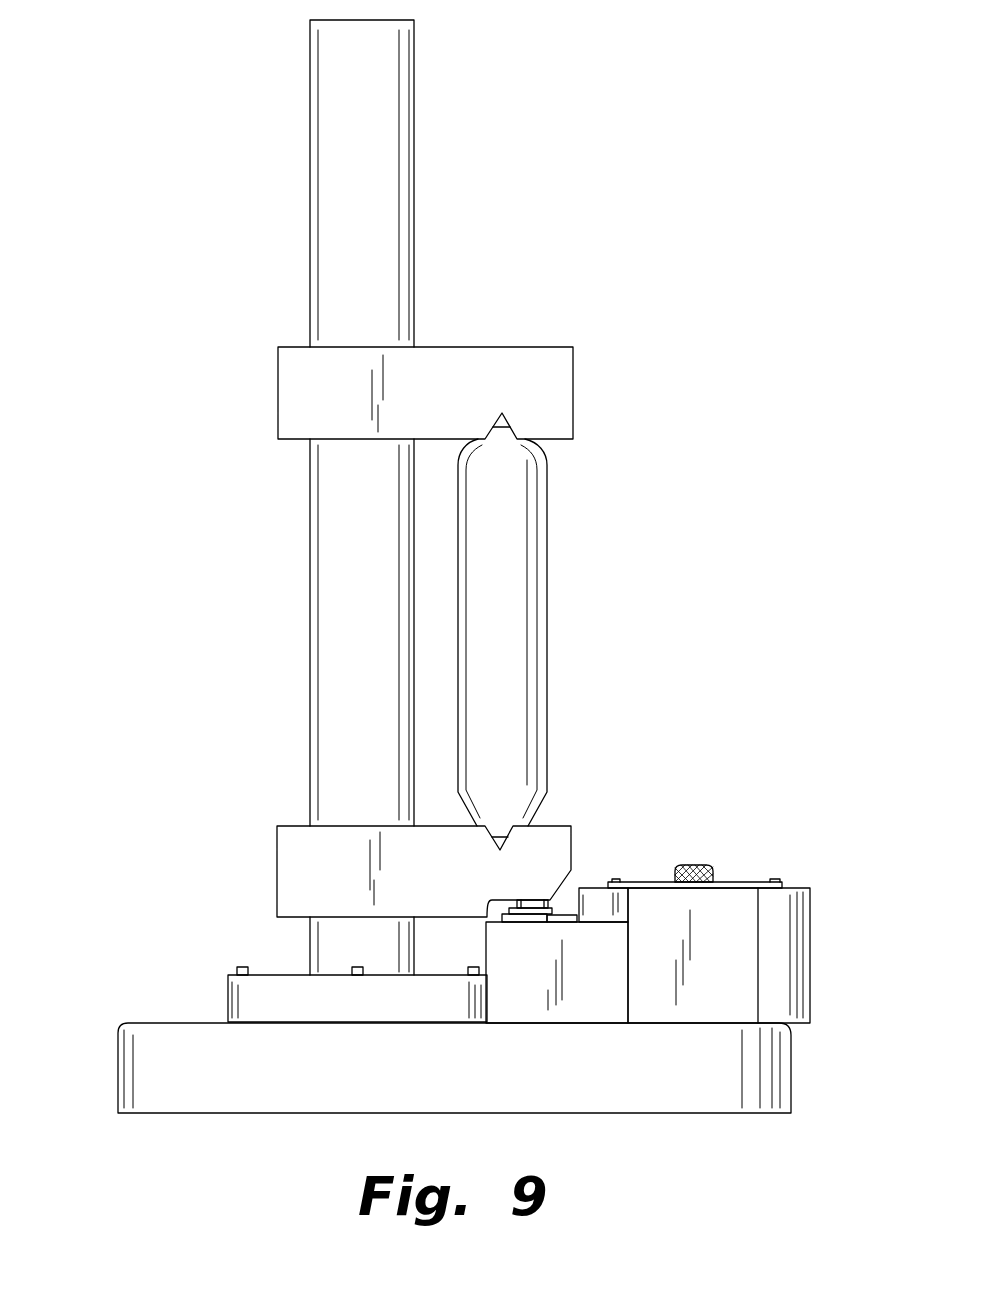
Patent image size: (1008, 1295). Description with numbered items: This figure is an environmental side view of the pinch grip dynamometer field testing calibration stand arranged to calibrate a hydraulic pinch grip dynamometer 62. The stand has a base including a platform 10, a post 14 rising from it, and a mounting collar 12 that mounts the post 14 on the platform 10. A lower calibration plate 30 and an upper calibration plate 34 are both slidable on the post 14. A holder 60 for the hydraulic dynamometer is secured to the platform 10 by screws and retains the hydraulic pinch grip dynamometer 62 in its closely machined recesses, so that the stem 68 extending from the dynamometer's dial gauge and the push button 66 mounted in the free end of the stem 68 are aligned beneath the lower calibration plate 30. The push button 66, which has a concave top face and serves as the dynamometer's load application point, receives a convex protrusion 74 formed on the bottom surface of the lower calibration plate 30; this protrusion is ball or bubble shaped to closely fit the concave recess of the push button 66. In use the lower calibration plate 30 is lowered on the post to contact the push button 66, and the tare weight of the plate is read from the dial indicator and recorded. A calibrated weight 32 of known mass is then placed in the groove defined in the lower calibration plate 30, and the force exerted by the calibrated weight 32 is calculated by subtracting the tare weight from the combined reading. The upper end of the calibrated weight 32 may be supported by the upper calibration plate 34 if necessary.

The platform 10 is at (791, 1066).
The mounting collar 12 is at (228, 997).
The post 14 is at (310, 150).
The lower calibration plate 30 is at (277, 864).
The calibrated weight 32 is at (547, 490).
The upper calibration plate 34 is at (278, 376).
The holder 60 is at (810, 953).
The hydraulic pinch grip dynamometer 62 is at (737, 883).
The push button 66 is at (548, 912).
The stem 68 is at (520, 917).
The convex protrusion 74 is at (530, 900).